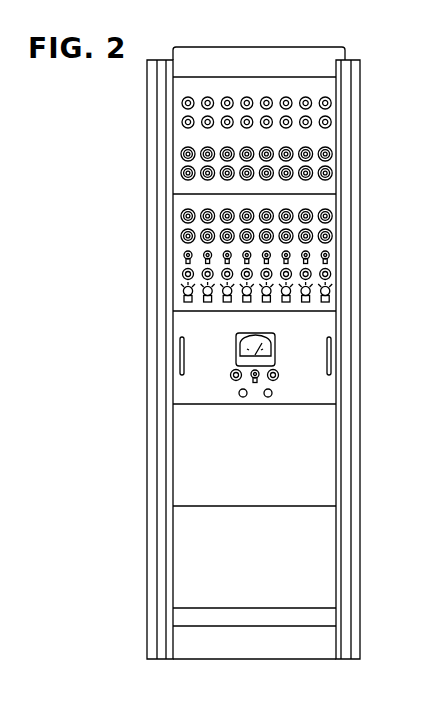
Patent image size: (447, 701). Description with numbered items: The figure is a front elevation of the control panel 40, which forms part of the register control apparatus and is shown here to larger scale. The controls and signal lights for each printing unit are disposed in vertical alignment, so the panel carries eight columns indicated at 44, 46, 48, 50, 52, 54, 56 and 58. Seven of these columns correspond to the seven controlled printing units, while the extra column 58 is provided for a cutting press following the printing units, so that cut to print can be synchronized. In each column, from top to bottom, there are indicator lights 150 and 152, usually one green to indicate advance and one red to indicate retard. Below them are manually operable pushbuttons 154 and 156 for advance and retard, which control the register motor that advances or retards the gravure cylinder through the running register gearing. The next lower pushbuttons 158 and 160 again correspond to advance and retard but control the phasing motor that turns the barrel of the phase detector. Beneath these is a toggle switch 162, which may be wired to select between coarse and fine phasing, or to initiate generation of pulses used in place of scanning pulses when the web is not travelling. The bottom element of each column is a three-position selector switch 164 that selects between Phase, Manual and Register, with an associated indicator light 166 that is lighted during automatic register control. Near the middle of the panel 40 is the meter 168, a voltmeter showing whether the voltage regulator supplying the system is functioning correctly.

The control panel 40 is at (152, 244).
The control column 44 is at (327, 166).
The control column 46 is at (307, 166).
The control column 48 is at (287, 166).
The control column 50 is at (267, 166).
The control column 52 is at (247, 166).
The control column 54 is at (227, 166).
The control column 56 is at (208, 166).
The extra control column 58 is at (188, 166).
The indicator light 150 is at (332, 103).
The indicator light 152 is at (332, 122).
The advance pushbutton 154 is at (333, 154).
The retard pushbutton 156 is at (333, 173).
The phasing pushbutton 158 is at (333, 216).
The phasing pushbutton 160 is at (333, 236).
The toggle switch 162 is at (330, 255).
The three-position selector switch 164 is at (331, 293).
The indicator light 166 is at (331, 274).
The meter 168 is at (276, 350).